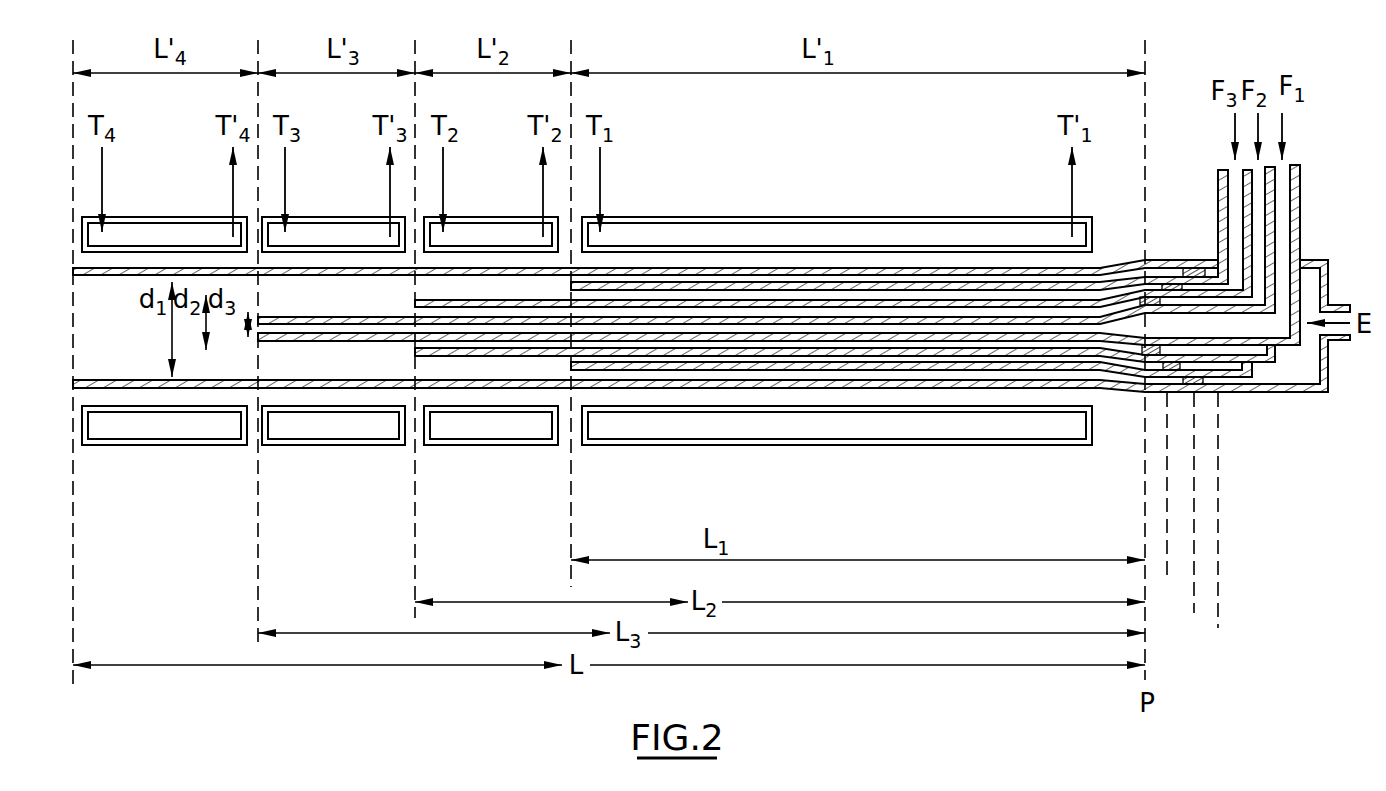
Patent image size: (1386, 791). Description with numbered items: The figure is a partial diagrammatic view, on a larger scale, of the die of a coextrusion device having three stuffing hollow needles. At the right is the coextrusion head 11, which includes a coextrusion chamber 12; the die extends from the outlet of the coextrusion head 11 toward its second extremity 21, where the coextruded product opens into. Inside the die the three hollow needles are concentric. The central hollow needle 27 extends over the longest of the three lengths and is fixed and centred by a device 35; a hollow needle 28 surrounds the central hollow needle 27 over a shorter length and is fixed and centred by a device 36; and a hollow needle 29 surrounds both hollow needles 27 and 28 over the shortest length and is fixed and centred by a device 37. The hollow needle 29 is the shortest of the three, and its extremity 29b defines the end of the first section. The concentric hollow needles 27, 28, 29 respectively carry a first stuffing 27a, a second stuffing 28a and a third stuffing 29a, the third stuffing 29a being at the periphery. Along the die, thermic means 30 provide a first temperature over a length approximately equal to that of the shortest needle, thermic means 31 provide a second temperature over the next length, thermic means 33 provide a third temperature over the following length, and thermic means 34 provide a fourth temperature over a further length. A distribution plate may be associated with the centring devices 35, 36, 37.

The coextrusion head 11 is at (1306, 406).
The coextrusion chamber 12 is at (1290, 362).
The second extremity 21 is at (75, 350).
The central hollow needle 27 is at (300, 330).
The first stuffing 27a is at (732, 331).
The hollow needle 28 is at (458, 352).
The second stuffing 28a is at (805, 346).
The hollow needle 29 is at (650, 371).
The third stuffing 29a is at (875, 361).
The extremity of hollow needle 29b is at (568, 294).
The thermic means 30 is at (728, 232).
The thermic means 31 is at (487, 232).
The thermic means 33 is at (333, 232).
The thermic means 34 is at (173, 232).
The device for fixing and centring 35 is at (1148, 297).
The device for fixing and centring 36 is at (1172, 284).
The device for fixing and centring 37 is at (1193, 268).